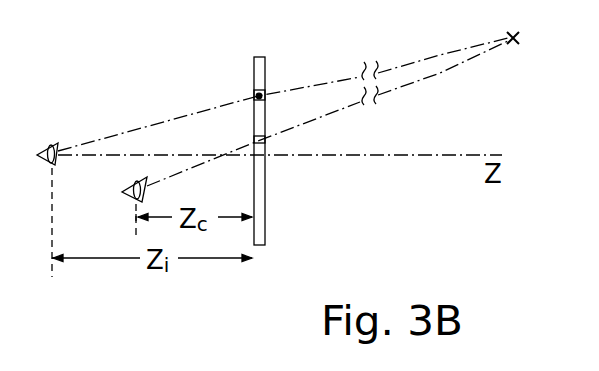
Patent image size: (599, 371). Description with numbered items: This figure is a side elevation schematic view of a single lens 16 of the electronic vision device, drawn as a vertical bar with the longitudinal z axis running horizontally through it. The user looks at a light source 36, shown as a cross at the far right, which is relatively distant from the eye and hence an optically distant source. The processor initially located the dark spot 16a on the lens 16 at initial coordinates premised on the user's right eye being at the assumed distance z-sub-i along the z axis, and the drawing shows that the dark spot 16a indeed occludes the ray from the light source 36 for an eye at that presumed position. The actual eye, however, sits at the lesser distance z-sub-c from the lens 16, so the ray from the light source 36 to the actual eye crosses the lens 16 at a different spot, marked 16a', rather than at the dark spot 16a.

The lens 16 is at (265, 230).
The dark spot 16a is at (292, 76).
The pixel on screen for second viewing position 16a' is at (298, 142).
The light source 36 is at (506, 32).